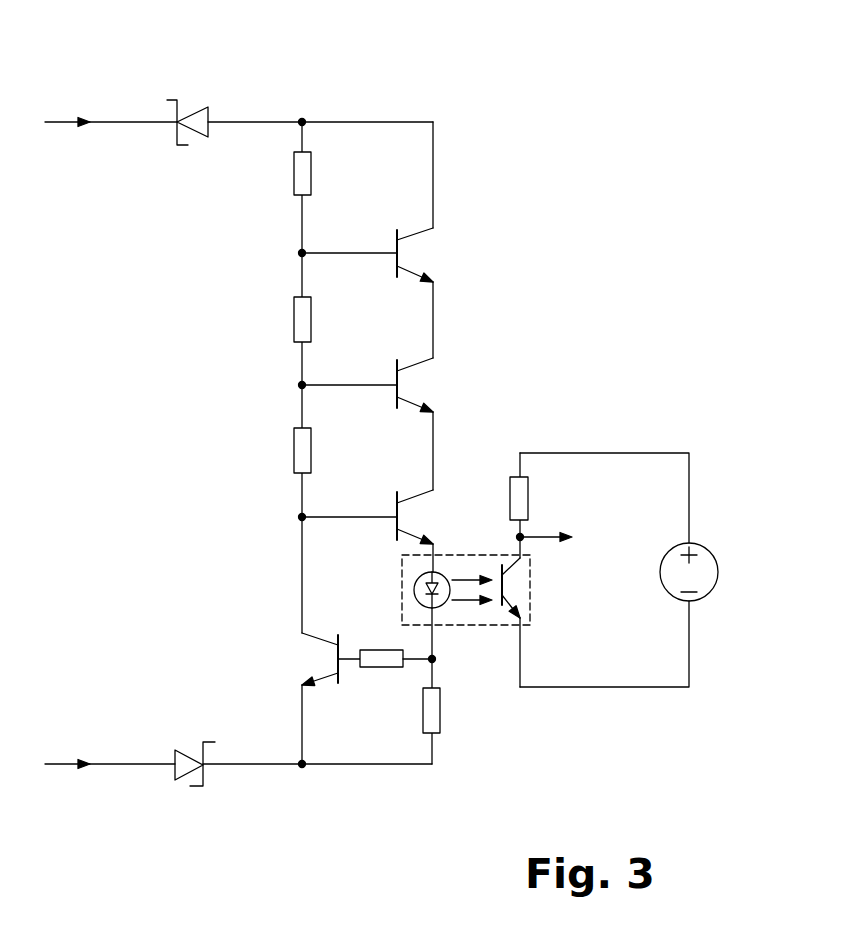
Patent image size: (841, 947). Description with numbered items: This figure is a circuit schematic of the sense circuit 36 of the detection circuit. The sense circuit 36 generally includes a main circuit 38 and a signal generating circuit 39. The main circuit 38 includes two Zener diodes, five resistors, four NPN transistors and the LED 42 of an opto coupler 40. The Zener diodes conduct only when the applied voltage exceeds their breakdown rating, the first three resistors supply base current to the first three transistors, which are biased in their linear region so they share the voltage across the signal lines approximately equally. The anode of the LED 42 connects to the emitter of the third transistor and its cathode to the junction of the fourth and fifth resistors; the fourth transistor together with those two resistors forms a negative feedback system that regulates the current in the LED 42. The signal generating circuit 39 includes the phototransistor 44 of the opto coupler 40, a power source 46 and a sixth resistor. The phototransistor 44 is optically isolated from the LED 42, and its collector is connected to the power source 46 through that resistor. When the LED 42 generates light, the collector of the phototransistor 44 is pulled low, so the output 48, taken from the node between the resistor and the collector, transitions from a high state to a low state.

The sense circuit 36 is at (677, 180).
The main circuit 38 is at (368, 95).
The signal generating circuit 39 is at (608, 423).
The opto coupler 40 is at (482, 641).
The LED 42 is at (414, 583).
The phototransistor 44 is at (524, 593).
The power source 46 is at (724, 559).
The output 48 is at (545, 541).